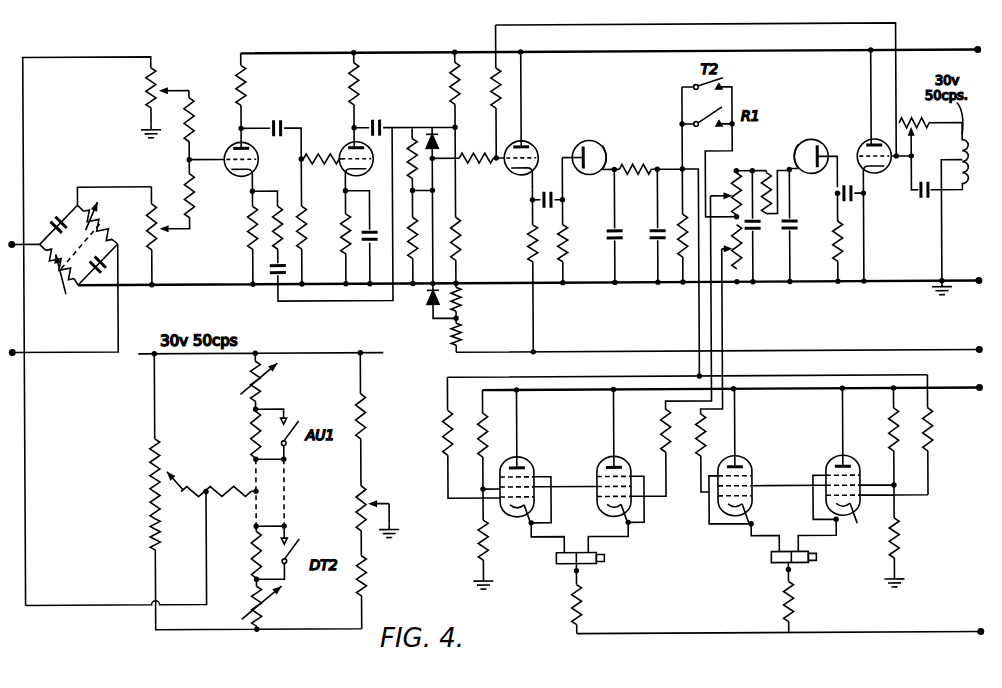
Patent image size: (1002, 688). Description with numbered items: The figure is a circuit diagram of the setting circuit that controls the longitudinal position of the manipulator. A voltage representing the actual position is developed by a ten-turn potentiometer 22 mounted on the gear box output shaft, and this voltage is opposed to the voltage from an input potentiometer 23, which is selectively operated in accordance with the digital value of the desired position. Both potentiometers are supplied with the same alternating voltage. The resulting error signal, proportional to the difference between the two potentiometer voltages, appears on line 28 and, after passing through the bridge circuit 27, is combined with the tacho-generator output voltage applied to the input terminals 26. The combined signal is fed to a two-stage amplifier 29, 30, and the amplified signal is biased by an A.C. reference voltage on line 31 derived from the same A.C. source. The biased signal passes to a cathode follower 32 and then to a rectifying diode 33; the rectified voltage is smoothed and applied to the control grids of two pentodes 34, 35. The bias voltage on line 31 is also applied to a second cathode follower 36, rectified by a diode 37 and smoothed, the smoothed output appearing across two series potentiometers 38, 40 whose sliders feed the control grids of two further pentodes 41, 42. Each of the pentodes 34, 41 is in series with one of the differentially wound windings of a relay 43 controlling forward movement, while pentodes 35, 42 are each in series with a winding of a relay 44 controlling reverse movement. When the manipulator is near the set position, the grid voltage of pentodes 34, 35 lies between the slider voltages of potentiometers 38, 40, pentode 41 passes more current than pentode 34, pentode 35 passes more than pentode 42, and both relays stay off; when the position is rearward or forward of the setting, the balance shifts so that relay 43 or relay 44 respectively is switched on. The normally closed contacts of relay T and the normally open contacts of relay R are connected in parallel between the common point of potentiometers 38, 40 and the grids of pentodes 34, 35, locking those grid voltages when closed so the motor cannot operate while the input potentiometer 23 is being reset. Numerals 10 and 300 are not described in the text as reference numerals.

The switch AU1 position 10 is at (286, 446).
The ten-turn potentiometer 22 is at (152, 495).
The input potentiometer 23 is at (250, 432).
The input terminals 26 is at (12, 347).
The bridge circuit 27 is at (98, 274).
The line 28 is at (73, 56).
The two-stage amplifier 29 is at (237, 143).
The two-stage amplifier 30 is at (345, 140).
The line 31 is at (496, 28).
The cathode follower 32 is at (530, 140).
The rectifying diode 33 is at (590, 141).
The pentode 34 is at (519, 459).
The pentode 35 is at (836, 458).
The cathode follower 36 is at (866, 136).
The diode 37 is at (805, 141).
The potentiometer 38 is at (735, 174).
The potentiometer 40 is at (740, 267).
The pentode 41 is at (610, 459).
The pentode 42 is at (742, 459).
The relay 43 is at (556, 561).
The relay 44 is at (816, 561).
The switch DT2 position 300 is at (286, 566).